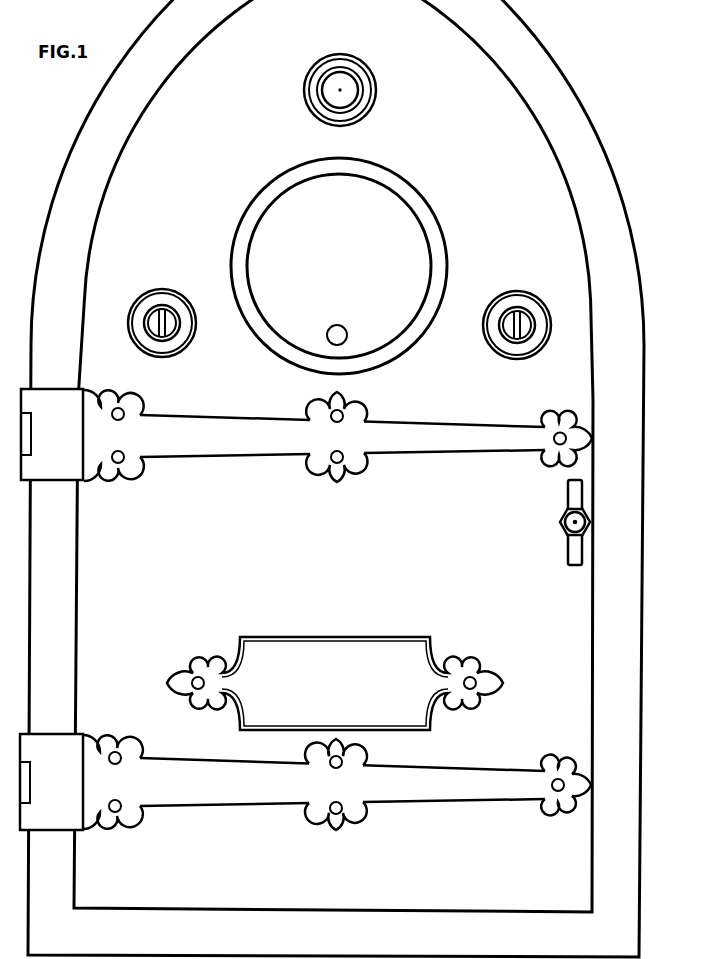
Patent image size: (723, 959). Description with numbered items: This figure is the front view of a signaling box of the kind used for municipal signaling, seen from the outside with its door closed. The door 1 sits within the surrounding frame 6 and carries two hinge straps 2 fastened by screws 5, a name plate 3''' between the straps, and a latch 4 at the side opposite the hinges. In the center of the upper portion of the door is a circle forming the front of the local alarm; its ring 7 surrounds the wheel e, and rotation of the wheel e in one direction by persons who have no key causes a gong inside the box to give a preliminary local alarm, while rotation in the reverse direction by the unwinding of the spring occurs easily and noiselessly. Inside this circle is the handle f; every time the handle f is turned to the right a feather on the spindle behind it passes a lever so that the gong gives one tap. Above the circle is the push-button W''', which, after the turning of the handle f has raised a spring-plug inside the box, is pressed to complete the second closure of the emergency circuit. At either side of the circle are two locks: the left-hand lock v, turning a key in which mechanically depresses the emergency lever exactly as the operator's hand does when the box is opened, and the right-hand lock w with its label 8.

The door 1 is at (333, 456).
The hinge strap 2 is at (306, 609).
The name plate 3''' is at (335, 683).
The latch 4 is at (575, 522).
The screws 5 is at (121, 419).
The door frame 6 is at (336, 478).
The window ring 7 is at (339, 266).
The lock 8 is at (520, 317).
The wheel e is at (339, 266).
The handle f is at (346, 339).
The left-hand lock v is at (162, 315).
The lock cylinder w is at (517, 317).
The push-button W''' is at (340, 81).